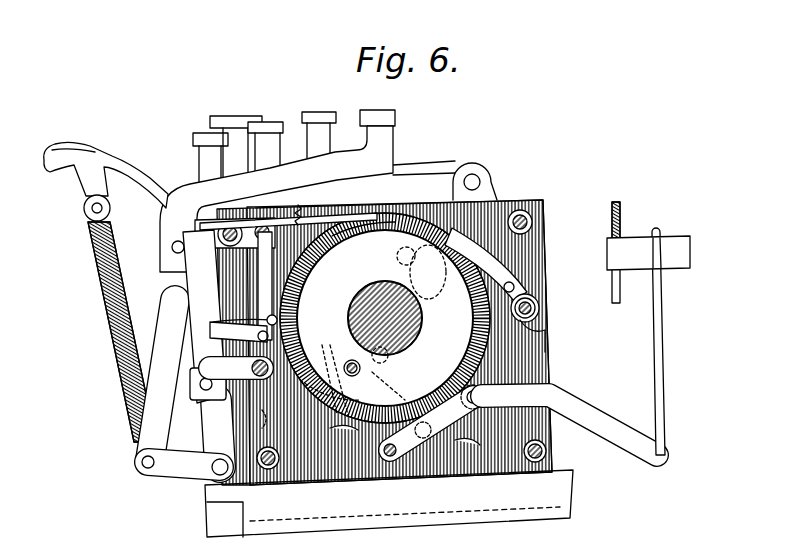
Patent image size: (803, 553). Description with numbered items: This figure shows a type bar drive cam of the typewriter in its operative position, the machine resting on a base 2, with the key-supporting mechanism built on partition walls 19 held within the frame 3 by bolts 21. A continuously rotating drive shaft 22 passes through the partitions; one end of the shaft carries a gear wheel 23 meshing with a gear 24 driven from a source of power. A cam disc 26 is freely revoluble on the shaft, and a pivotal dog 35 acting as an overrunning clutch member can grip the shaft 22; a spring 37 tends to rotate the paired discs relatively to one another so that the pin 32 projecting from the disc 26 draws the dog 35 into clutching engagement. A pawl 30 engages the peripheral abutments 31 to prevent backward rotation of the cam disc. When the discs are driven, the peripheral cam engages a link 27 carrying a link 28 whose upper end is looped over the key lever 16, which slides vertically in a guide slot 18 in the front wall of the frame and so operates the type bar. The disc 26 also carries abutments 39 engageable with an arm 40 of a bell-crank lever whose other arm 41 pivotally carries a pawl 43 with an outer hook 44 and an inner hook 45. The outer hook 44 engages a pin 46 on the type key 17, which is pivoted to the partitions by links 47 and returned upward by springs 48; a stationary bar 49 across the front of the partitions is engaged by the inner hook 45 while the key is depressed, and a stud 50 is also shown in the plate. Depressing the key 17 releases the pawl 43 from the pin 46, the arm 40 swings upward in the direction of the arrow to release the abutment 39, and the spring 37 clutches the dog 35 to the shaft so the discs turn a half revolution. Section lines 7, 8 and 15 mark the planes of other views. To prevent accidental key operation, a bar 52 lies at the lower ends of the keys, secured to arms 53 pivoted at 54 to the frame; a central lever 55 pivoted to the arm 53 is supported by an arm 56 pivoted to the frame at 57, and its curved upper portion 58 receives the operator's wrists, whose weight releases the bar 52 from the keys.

The base 2 is at (536, 512).
The frame 3 is at (612, 222).
The section line 7 is at (153, 217).
The section line 8 is at (177, 325).
The section line 15 is at (443, 195).
The key lever 16 is at (322, 333).
The type key 17 is at (356, 128).
The guide slot 18 is at (282, 322).
The partition wall 19 is at (542, 362).
The bolt 21 is at (534, 463).
The drive shaft 22 is at (423, 323).
The gear wheel 23 is at (467, 452).
The gear 24 is at (270, 448).
The cam disc 26 is at (458, 342).
The link 27 is at (600, 425).
The link 28 is at (661, 407).
The pawl 30 is at (482, 250).
The peripheral abutment 31 is at (279, 411).
The pin 32 is at (375, 367).
The pivotal dog 35 is at (385, 318).
The spring 37 is at (421, 272).
The abutment 39 is at (345, 233).
The bell-crank lever arm 40 is at (308, 224).
The bell-crank lever arm 41 is at (190, 237).
The pawl 43 is at (213, 322).
The outer hook 44 is at (192, 345).
The inner hook 45 is at (262, 380).
The pin 46 is at (214, 346).
The link 47 is at (227, 433).
The spring 48 is at (166, 262).
The stationary bar 49 is at (200, 378).
The stud 50 is at (344, 440).
The bar 52 is at (178, 415).
The arm 53 is at (158, 470).
The pivot 54 is at (206, 474).
The central lever 55 is at (120, 333).
The arm 56 is at (120, 162).
The pivot 57 is at (480, 178).
The upper transversely extending portion 58 is at (78, 148).